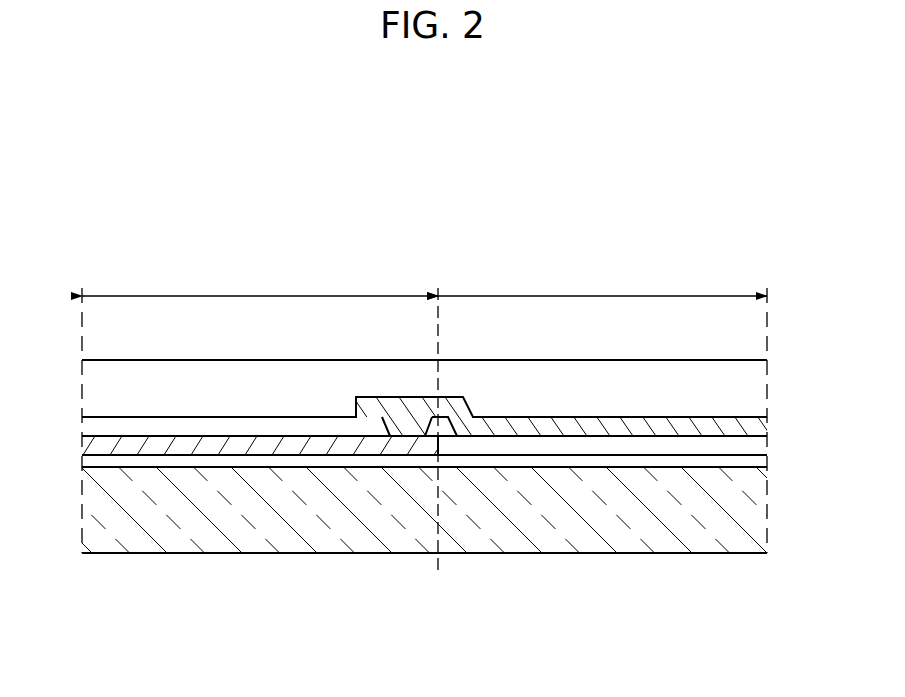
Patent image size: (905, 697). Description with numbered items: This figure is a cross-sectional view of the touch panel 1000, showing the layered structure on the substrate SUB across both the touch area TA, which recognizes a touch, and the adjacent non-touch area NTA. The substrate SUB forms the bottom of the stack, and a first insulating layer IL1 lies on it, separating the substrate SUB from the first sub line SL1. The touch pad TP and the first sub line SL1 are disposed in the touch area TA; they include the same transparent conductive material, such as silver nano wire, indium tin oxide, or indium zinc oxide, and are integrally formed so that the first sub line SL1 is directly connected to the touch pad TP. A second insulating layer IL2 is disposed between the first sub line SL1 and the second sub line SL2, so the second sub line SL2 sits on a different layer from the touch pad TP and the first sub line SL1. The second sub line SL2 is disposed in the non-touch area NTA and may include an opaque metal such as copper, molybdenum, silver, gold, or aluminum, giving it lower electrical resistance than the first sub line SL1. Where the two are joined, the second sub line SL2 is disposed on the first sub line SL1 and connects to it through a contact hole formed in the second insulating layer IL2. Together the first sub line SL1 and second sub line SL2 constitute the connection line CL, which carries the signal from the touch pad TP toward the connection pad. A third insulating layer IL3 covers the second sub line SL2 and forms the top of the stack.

The touch panel 1000 is at (460, 234).
The touch area TA is at (260, 278).
The non-touch area NTA is at (602, 278).
The third insulating layer IL3 is at (550, 378).
The touch pad TP is at (178, 447).
The first sub line SL1 is at (400, 450).
The second sub line SL2 is at (497, 436).
The connection line CL is at (498, 619).
The second insulating layer IL2 is at (552, 447).
The first insulating layer IL1 is at (623, 460).
The substrate SUB is at (698, 542).